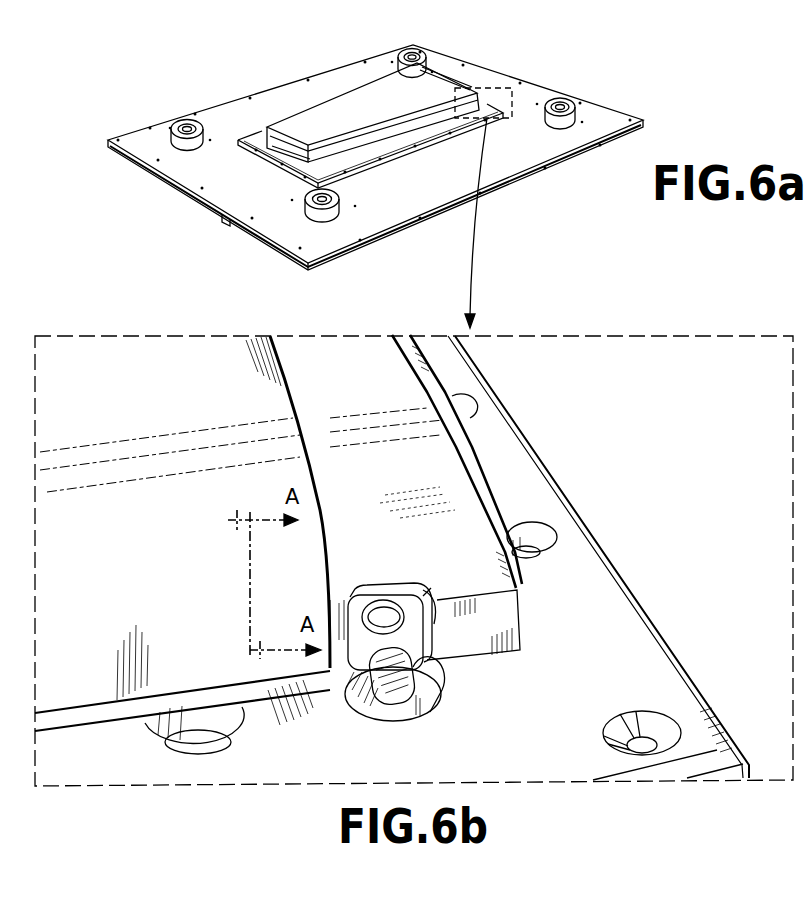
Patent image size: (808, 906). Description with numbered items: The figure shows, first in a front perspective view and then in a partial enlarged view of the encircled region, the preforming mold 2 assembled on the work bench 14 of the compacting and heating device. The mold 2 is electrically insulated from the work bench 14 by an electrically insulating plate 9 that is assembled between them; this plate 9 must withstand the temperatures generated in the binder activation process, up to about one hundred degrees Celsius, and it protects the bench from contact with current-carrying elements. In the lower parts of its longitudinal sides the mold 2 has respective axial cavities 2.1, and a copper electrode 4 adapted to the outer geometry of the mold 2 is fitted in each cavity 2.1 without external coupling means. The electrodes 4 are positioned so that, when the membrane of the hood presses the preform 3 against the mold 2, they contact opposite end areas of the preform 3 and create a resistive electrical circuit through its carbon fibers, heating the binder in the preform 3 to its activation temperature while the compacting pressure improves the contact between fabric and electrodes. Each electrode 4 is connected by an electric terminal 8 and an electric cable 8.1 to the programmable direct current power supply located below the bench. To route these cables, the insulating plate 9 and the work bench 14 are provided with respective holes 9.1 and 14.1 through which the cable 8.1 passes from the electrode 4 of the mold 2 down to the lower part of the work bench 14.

The preforming mold 2 is at (427, 470).
The axial cavity 2.1 is at (348, 640).
The preform 3 is at (248, 383).
The copper electrode 4 is at (433, 595).
The electric terminal 8 is at (406, 645).
The electric cable 8.1 is at (412, 708).
The electrically insulating plate 9 is at (643, 692).
The hole in insulating plate 9.1 is at (435, 687).
The work bench 14 is at (720, 392).
The hole in work bench 14.1 is at (425, 712).